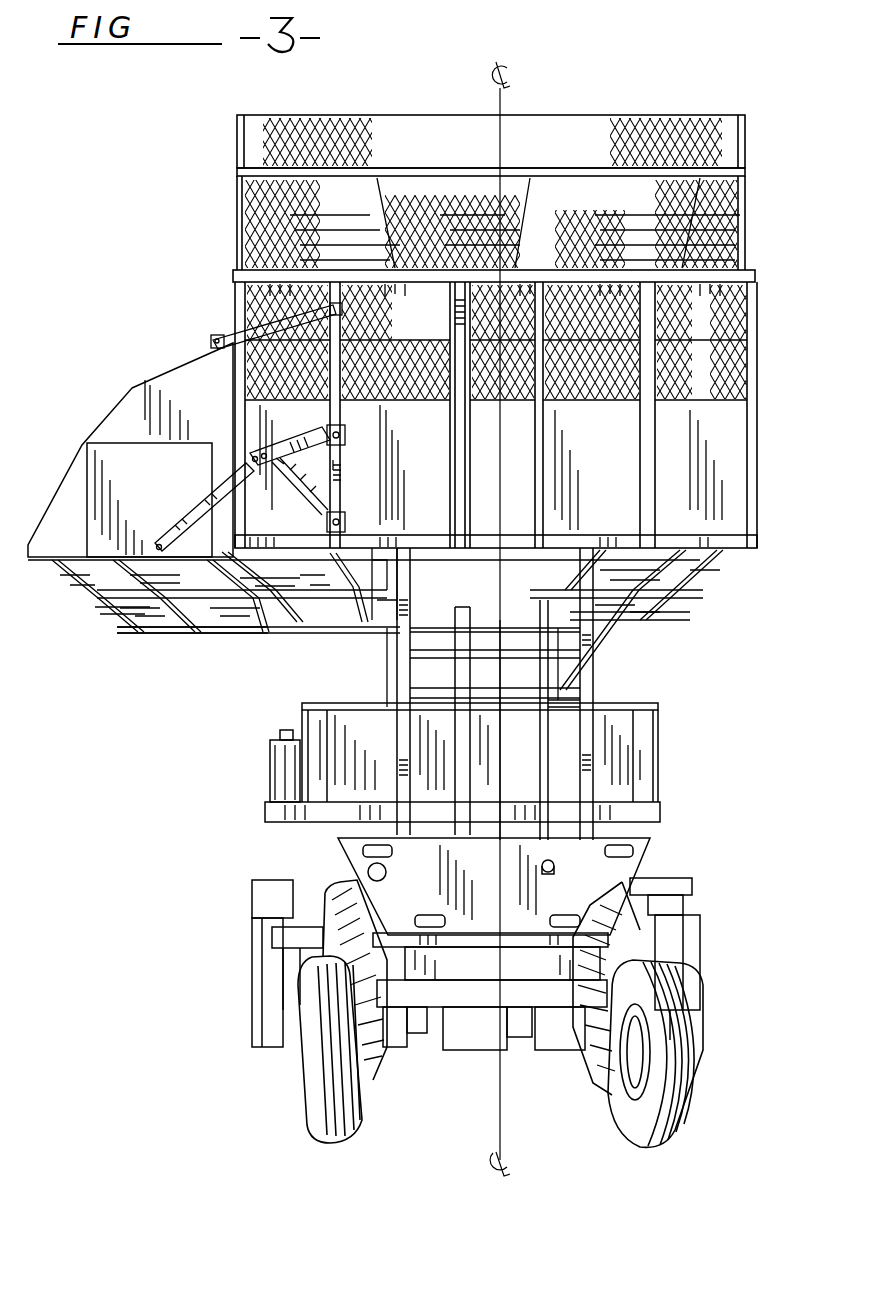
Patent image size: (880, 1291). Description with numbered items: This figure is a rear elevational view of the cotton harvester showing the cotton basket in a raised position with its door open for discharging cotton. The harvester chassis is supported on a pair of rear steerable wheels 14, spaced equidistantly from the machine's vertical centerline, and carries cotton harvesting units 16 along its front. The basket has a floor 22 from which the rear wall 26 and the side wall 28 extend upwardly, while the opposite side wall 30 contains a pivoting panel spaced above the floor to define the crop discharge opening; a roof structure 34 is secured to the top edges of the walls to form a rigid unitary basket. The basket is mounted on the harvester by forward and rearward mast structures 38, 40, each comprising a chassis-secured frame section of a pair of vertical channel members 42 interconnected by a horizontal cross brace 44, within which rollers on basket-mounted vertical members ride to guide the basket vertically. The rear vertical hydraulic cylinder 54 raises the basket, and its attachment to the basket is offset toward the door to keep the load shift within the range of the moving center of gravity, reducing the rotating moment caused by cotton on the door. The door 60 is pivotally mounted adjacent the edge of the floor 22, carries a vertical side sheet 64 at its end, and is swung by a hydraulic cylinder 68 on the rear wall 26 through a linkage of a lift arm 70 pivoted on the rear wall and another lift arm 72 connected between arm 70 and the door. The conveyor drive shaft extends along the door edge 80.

The rear steerable wheels 14 is at (320, 1098).
The cotton harvesting units 16 is at (252, 1010).
The floor 22 is at (640, 618).
The rear wall 26 is at (735, 436).
The side wall 28 is at (740, 318).
The side wall 30 is at (232, 184).
The roof structure 34 is at (660, 119).
The forward mast structure 38 is at (565, 690).
The rearward mast structure 40 is at (600, 678).
The vertical channel members 42 is at (594, 657).
The horizontal cross brace 44 is at (440, 600).
The vertical hydraulic cylinder 54 is at (455, 694).
The door 60 is at (152, 628).
The vertical side sheet 64 is at (148, 492).
The hydraulic cylinder 68 is at (318, 495).
The lift arm 70 is at (282, 445).
The lift arm 72 is at (197, 512).
The door edge 80 is at (110, 615).